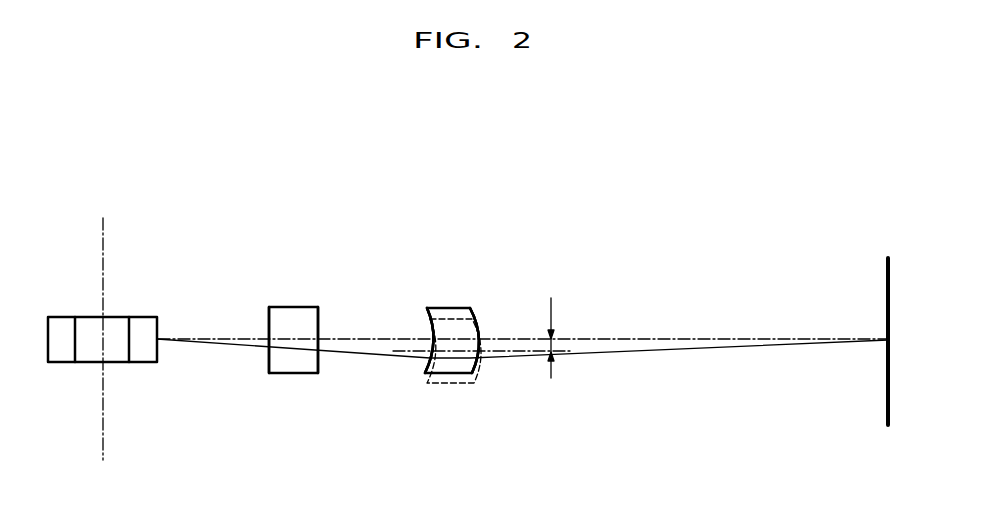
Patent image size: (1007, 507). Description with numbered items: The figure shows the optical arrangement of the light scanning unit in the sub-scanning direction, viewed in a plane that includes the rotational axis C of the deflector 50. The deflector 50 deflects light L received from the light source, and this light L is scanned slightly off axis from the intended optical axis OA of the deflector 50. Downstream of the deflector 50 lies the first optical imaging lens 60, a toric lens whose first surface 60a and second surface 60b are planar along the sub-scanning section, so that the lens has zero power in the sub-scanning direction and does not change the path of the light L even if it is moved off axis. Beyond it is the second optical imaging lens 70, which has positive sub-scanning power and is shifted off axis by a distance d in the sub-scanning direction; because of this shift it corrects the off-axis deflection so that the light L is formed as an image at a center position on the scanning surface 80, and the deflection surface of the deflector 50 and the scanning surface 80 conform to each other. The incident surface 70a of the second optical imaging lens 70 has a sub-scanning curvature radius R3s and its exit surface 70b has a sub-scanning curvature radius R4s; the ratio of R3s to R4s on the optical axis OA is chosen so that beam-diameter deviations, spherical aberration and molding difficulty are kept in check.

The rotational axis C is at (103, 282).
The deflector 50 is at (145, 365).
The first optical imaging lens 60 is at (293, 375).
The first surface of the first optical imaging lens 60a is at (269, 320).
The second surface of the first optical imaging lens 60b is at (318, 320).
The second optical imaging lens 70 is at (447, 375).
The incident surface 70a is at (427, 308).
The exit surface 70b is at (471, 308).
The sub-scanning curvature radius of the incident surface R3s is at (435, 338).
The sub-scanning curvature radius of the exit surface R4s is at (480, 338).
The distance d is at (560, 338).
The optical axis OA is at (632, 338).
The light L is at (602, 355).
The scanning surface 80 is at (887, 403).